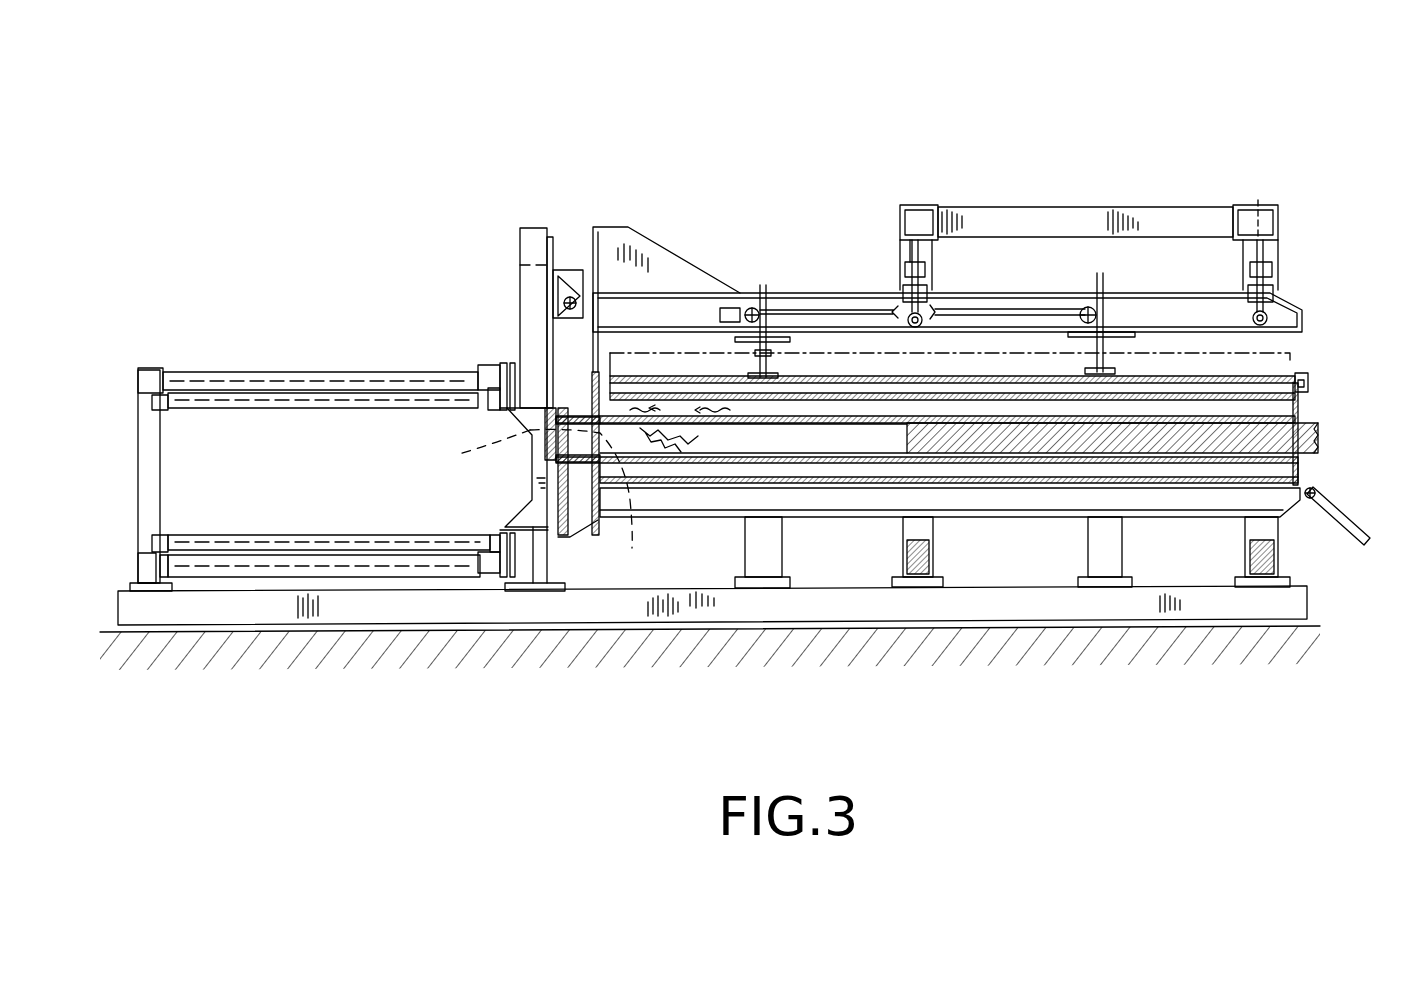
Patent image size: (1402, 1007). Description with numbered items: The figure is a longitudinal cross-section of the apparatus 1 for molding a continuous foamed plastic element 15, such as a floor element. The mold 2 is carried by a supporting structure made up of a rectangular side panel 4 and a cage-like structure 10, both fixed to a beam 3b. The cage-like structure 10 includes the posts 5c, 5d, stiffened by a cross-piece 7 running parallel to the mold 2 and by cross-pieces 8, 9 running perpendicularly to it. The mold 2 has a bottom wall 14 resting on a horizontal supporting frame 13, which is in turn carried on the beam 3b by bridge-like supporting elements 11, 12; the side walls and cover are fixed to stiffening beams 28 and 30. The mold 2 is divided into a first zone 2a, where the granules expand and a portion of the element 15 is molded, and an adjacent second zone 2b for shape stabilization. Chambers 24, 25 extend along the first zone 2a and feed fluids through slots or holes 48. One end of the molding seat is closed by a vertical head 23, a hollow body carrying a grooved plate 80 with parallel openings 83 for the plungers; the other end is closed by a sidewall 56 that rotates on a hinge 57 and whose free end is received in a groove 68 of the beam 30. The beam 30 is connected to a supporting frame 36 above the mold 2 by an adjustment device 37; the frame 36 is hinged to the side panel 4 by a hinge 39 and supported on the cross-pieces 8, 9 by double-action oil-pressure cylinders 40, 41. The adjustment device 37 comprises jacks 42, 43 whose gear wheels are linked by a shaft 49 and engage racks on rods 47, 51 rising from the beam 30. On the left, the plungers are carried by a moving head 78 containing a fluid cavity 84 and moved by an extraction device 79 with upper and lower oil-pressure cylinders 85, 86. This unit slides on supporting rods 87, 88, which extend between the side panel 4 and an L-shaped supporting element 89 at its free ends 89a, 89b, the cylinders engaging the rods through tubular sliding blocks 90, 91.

The molding apparatus 1 is at (783, 135).
The mold 2 is at (1325, 320).
The first zone 2a is at (878, 430).
The second zone 2b is at (1052, 435).
The beam 3b is at (205, 612).
The side panel 4 is at (520, 240).
The post 5c is at (930, 270).
The post 5d is at (1280, 262).
The cross-piece 7 is at (1140, 207).
The cross-piece 8 is at (913, 205).
The cross-piece 9 is at (1280, 212).
The cage-like structure 10 is at (1040, 185).
The bridge-like supporting element 11 is at (758, 555).
The bridge-like supporting element 12 is at (1104, 560).
The horizontal supporting frame 13 is at (678, 505).
The bottom wall 14 is at (1002, 463).
The continuous element 15 is at (1222, 483).
The vertical head 23 is at (570, 520).
The chamber 24 is at (830, 480).
The chamber 25 is at (808, 400).
The supporting and stiffening beam 28 is at (692, 430).
The beam 30 is at (1280, 376).
The supporting frame 36 is at (850, 293).
The adjustment device 37 is at (740, 280).
The hinge 39 is at (566, 270).
The double-action oil-pressure cylinder 40 is at (888, 250).
The double-action oil-pressure cylinder 41 is at (1250, 272).
The mechanical jack 42 is at (780, 300).
The mechanical jack 43 is at (1108, 332).
The rod 47 is at (758, 300).
The slots or holes 48 is at (660, 405).
The shaft 49 is at (1015, 309).
The rod 51 is at (1095, 280).
The sidewall 56 is at (1352, 520).
The hinge 57 is at (1315, 488).
The groove 68 is at (1308, 385).
The moving head 78 is at (476, 451).
The extraction device 79 is at (345, 350).
The grooved plate 80 is at (590, 473).
The openings 83 is at (600, 300).
The cavity 84 is at (535, 365).
The upper oil-pressure cylinder 85 is at (350, 408).
The lower oil-pressure cylinder 86 is at (245, 540).
The upper supporting rod 87 is at (237, 372).
The lower supporting rod 88 is at (350, 558).
The L-shaped supporting element 89 is at (160, 470).
The free end 89a is at (145, 378).
The free end 89b is at (140, 572).
The tubular sliding block 90 is at (485, 368).
The tubular sliding block 91 is at (490, 575).